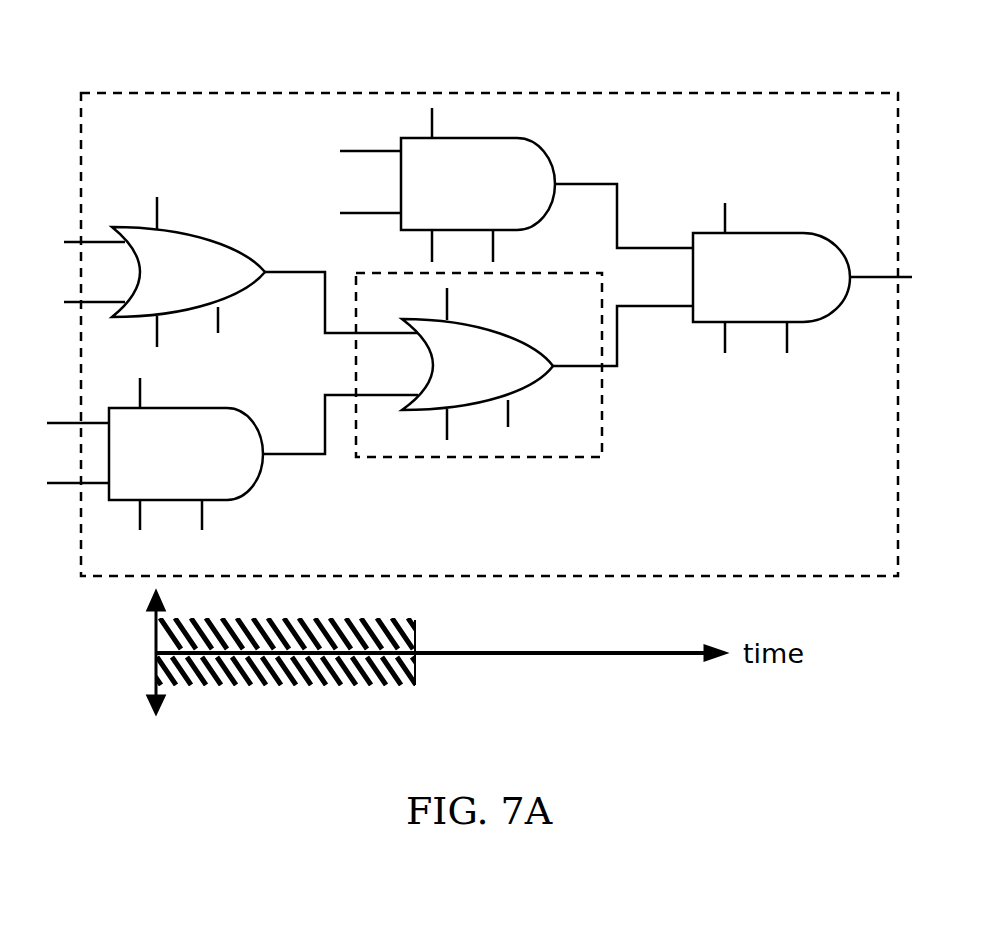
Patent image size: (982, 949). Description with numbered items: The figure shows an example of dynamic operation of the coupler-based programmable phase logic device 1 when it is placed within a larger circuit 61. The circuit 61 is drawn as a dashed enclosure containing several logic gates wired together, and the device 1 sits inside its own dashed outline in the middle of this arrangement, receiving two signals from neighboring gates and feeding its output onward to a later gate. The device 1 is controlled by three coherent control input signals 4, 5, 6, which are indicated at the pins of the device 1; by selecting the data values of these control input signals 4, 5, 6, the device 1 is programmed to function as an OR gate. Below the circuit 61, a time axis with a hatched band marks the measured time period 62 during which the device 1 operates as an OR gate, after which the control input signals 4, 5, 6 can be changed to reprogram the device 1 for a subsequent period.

The circuit 61 is at (495, 93).
The coupler-based programmable phase logic device 1 is at (493, 457).
The control input signal 4 is at (447, 303).
The control input signal 5 is at (447, 427).
The control input signal 6 is at (508, 413).
The measured time period 62 is at (278, 685).